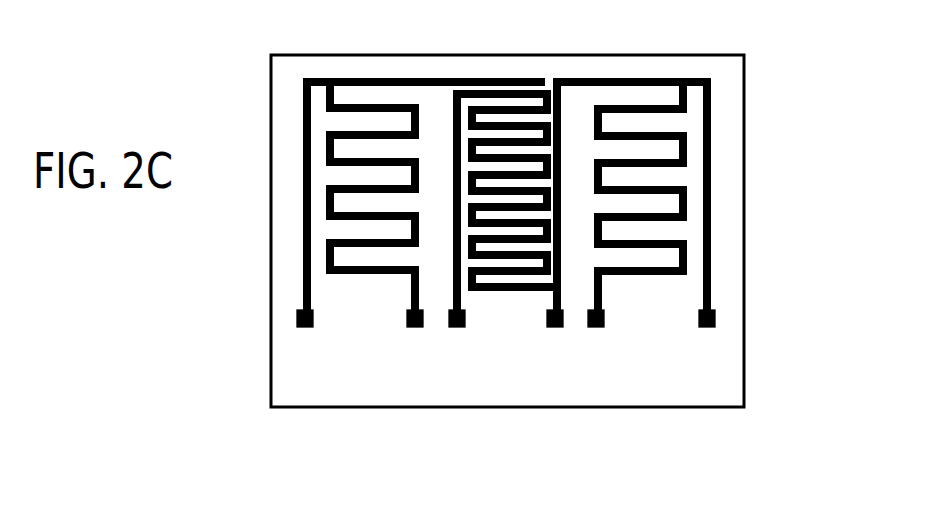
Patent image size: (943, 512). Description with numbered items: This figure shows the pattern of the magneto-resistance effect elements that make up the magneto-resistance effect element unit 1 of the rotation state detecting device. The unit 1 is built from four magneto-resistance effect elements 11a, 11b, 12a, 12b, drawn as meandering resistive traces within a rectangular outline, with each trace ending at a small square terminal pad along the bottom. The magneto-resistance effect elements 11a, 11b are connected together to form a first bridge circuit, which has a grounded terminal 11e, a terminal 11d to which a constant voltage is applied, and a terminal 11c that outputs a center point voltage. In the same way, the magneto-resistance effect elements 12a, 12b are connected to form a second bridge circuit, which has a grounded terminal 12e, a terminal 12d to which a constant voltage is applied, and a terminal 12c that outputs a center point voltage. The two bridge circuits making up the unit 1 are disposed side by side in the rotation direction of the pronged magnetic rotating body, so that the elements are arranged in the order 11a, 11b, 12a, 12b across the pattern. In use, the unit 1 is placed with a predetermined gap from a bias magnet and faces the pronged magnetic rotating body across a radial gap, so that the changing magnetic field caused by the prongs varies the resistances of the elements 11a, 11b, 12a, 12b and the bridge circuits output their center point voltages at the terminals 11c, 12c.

The magneto-resistance effect element unit 1 is at (745, 377).
The magneto-resistance effect element 11a is at (348, 274).
The magneto-resistance effect element 11b is at (455, 243).
The terminal 11c is at (297, 316).
The terminal 11d is at (413, 327).
The grounded terminal 11e is at (457, 327).
The magneto-resistance effect element 12a is at (505, 288).
The magneto-resistance effect element 12b is at (668, 275).
The terminal 12c is at (715, 316).
The terminal 12d is at (554, 327).
The grounded terminal 12e is at (596, 327).